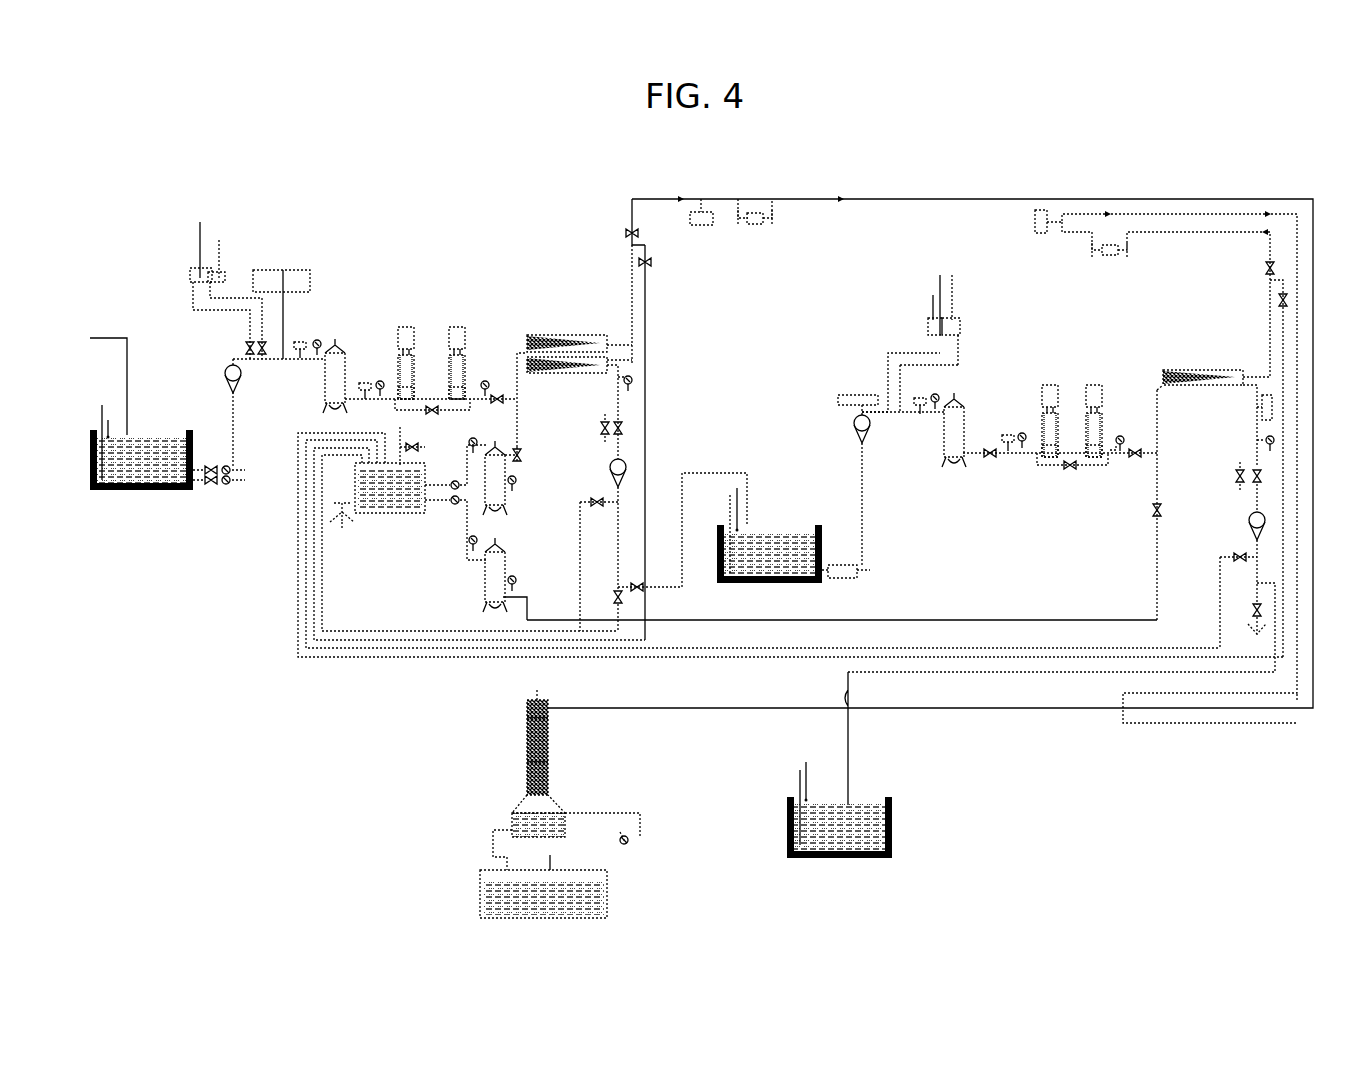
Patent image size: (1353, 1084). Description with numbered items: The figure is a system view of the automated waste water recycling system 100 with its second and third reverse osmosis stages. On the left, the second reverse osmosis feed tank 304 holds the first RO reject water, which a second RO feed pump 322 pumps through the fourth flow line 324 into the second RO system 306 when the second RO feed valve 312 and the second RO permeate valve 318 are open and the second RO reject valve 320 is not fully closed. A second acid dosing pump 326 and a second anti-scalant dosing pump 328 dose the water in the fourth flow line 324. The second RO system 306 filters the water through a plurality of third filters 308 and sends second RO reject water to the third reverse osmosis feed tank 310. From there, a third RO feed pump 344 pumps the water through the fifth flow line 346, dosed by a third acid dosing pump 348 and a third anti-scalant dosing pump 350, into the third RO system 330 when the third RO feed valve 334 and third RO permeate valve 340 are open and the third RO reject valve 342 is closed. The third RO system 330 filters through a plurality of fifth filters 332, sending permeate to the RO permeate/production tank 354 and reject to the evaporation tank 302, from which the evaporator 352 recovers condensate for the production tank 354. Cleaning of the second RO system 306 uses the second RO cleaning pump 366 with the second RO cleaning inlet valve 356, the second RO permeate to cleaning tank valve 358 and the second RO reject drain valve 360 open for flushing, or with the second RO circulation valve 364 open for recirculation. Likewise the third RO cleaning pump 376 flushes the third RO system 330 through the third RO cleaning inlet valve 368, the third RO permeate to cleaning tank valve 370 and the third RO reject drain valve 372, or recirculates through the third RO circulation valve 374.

The automated waste water recycling system 100 is at (144, 159).
The evaporation tank 302 is at (892, 832).
The second reverse osmosis feed tank 304 is at (143, 493).
The second reverse osmosis system 306 is at (284, 340).
The third filters 308 is at (348, 375).
The third reverse osmosis feed tank 310 is at (818, 525).
The second RO feed valve 312 is at (495, 395).
The second RO permeate valve 318 is at (628, 233).
The second RO reject valve 320 is at (610, 442).
The second RO feed pump 322 is at (228, 485).
The fourth flow line 324 is at (239, 440).
The second acid dosing pump 326 is at (196, 275).
The second anti-scalant dosing pump 328 is at (227, 275).
The third reverse osmosis system 330 is at (868, 430).
The fifth filters 332 is at (967, 418).
The third RO feed valve 334 is at (1135, 445).
The third RO permeate valve 340 is at (1263, 268).
The third RO reject valve 342 is at (1242, 488).
The third RO feed pump 344 is at (860, 577).
The fifth flow line 346 is at (866, 485).
The third acid dosing pump 348 is at (937, 317).
The third anti-scalant dosing pump 350 is at (956, 333).
The evaporator 352 is at (548, 760).
The RO permeate/production tank 354 is at (394, 513).
The second RO cleaning inlet valve 356 is at (523, 455).
The second RO permeate to cleaning tank valve 358 is at (648, 270).
The second RO reject drain valve 360 is at (617, 589).
The second RO circulation valve 364 is at (590, 503).
The second RO cleaning pump 366 is at (454, 482).
The third RO cleaning inlet valve 368 is at (1150, 508).
The third RO permeate to cleaning tank valve 370 is at (1275, 300).
The third RO reject drain valve 372 is at (1248, 607).
The third RO circulation valve 374 is at (1218, 556).
The third RO cleaning pump 376 is at (456, 508).